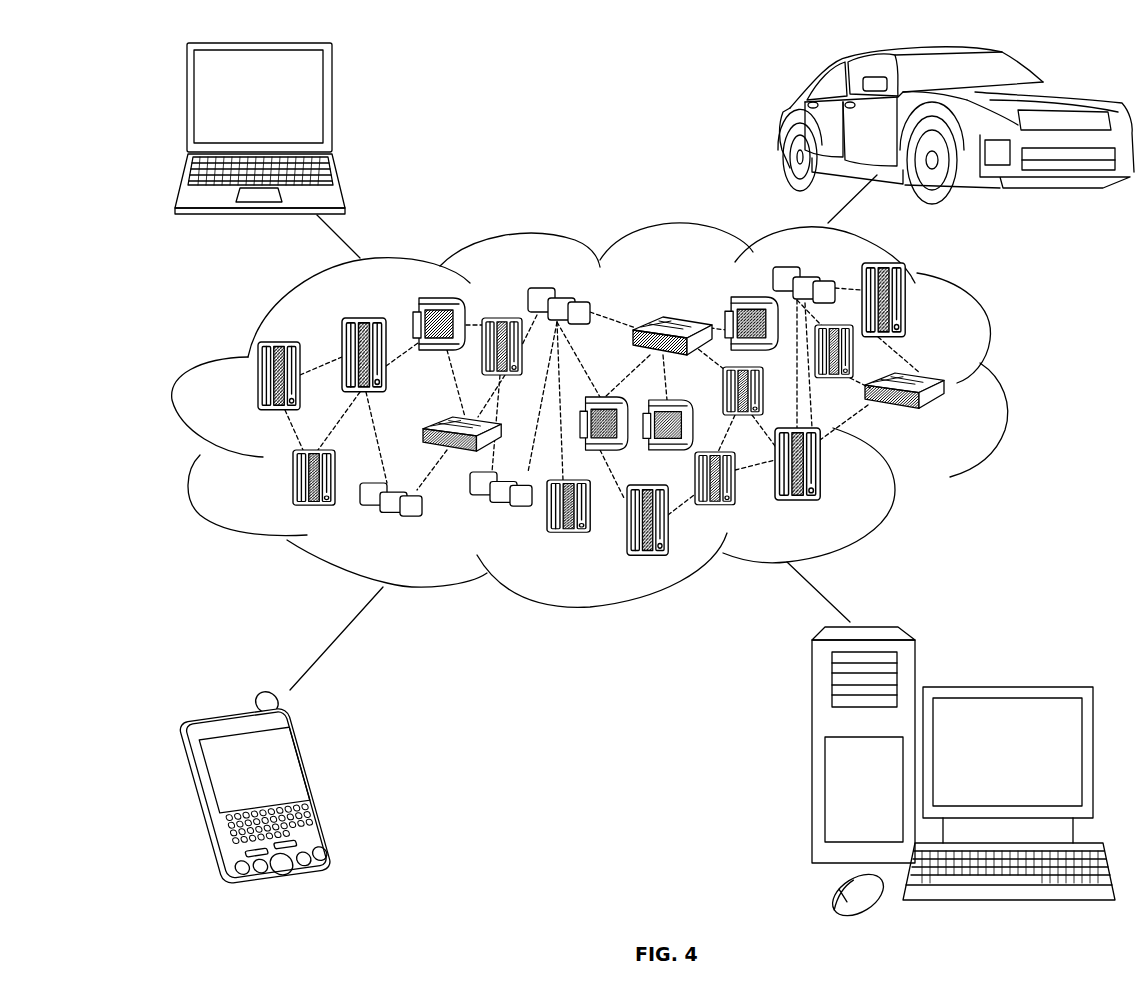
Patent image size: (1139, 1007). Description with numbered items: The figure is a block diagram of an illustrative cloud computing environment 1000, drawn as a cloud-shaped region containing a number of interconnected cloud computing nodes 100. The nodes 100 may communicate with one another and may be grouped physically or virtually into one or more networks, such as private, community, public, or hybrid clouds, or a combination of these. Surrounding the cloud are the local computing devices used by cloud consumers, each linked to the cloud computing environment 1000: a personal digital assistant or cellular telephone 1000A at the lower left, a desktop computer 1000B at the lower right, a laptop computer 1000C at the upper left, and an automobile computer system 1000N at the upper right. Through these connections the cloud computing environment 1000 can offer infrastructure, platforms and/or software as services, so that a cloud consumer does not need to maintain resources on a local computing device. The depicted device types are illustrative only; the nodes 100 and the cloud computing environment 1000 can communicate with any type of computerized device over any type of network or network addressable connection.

The cloud computing nodes 100 is at (955, 422).
The cloud computing environment 1000 is at (1008, 393).
The personal digital assistant (PDA) or cellular telephone 1000A is at (317, 787).
The desktop computer 1000B is at (1004, 686).
The laptop computer 1000C is at (333, 110).
The automobile computer system 1000N is at (778, 127).